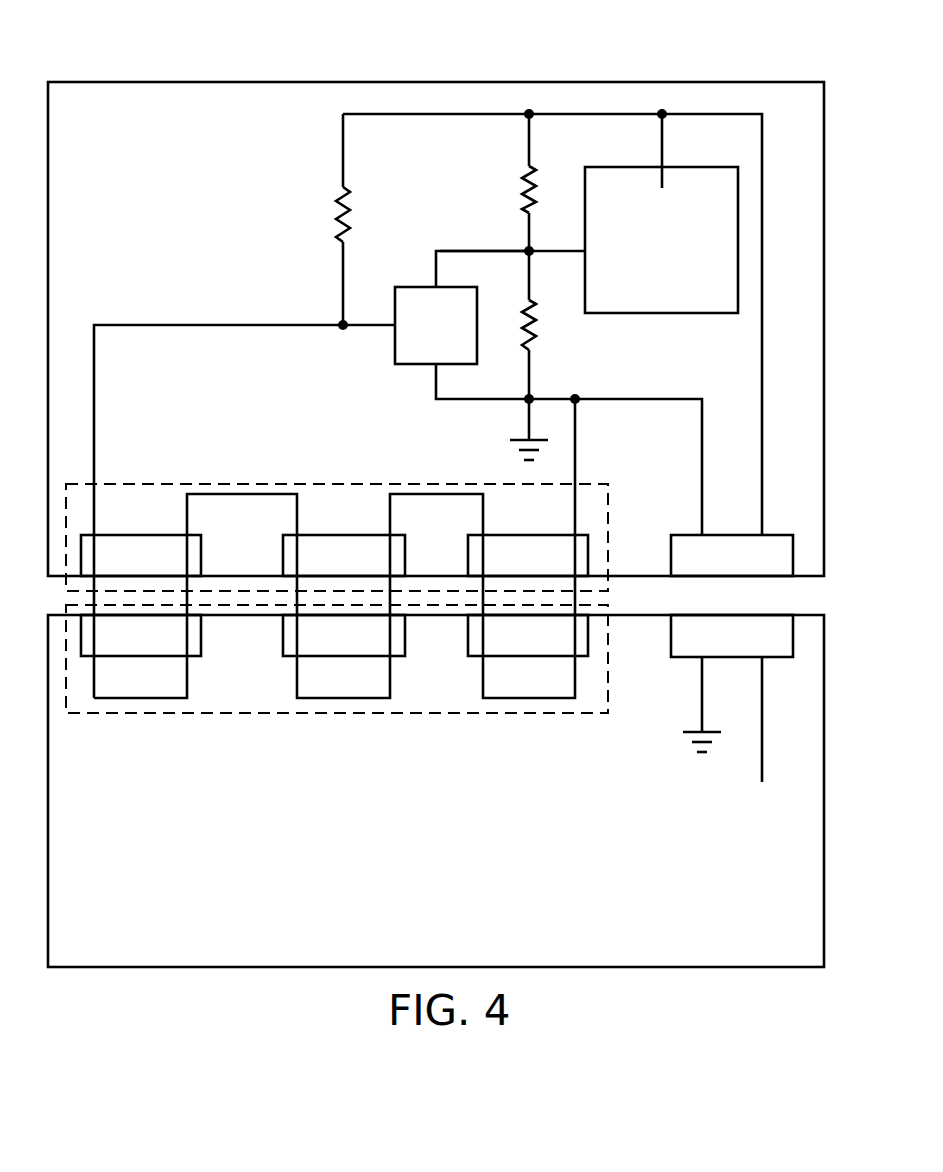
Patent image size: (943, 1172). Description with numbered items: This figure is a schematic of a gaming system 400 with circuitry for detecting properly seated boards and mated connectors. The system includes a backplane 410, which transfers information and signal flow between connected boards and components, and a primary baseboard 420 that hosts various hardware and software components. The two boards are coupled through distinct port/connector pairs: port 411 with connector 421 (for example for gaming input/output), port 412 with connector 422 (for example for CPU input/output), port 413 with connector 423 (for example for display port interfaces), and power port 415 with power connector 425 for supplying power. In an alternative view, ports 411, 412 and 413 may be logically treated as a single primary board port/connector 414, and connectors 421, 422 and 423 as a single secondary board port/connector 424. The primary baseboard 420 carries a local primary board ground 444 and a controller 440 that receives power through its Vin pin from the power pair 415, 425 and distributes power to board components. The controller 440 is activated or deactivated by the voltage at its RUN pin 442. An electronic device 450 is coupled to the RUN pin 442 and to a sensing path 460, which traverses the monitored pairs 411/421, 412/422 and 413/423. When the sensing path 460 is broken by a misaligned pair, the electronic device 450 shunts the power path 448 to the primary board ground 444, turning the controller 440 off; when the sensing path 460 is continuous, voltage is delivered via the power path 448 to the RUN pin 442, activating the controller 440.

The gaming system 400 is at (123, 38).
The backplane 410 is at (593, 967).
The port 411 is at (112, 656).
The port 412 is at (314, 656).
The port 413 is at (502, 656).
The primary board port/connector 414 is at (335, 713).
The power port 415 is at (671, 637).
The primary baseboard 420 is at (435, 82).
The connector 421 is at (112, 535).
The connector 422 is at (314, 535).
The connector 423 is at (502, 535).
The secondary board port/connector 424 is at (337, 483).
The power connector 425 is at (671, 553).
The controller 440 is at (660, 313).
The RUN pin 442 is at (606, 262).
The primary board ground 444 is at (515, 441).
The power path 448 is at (478, 242).
The electronic device 450 is at (410, 365).
The sensing path 460 is at (245, 323).